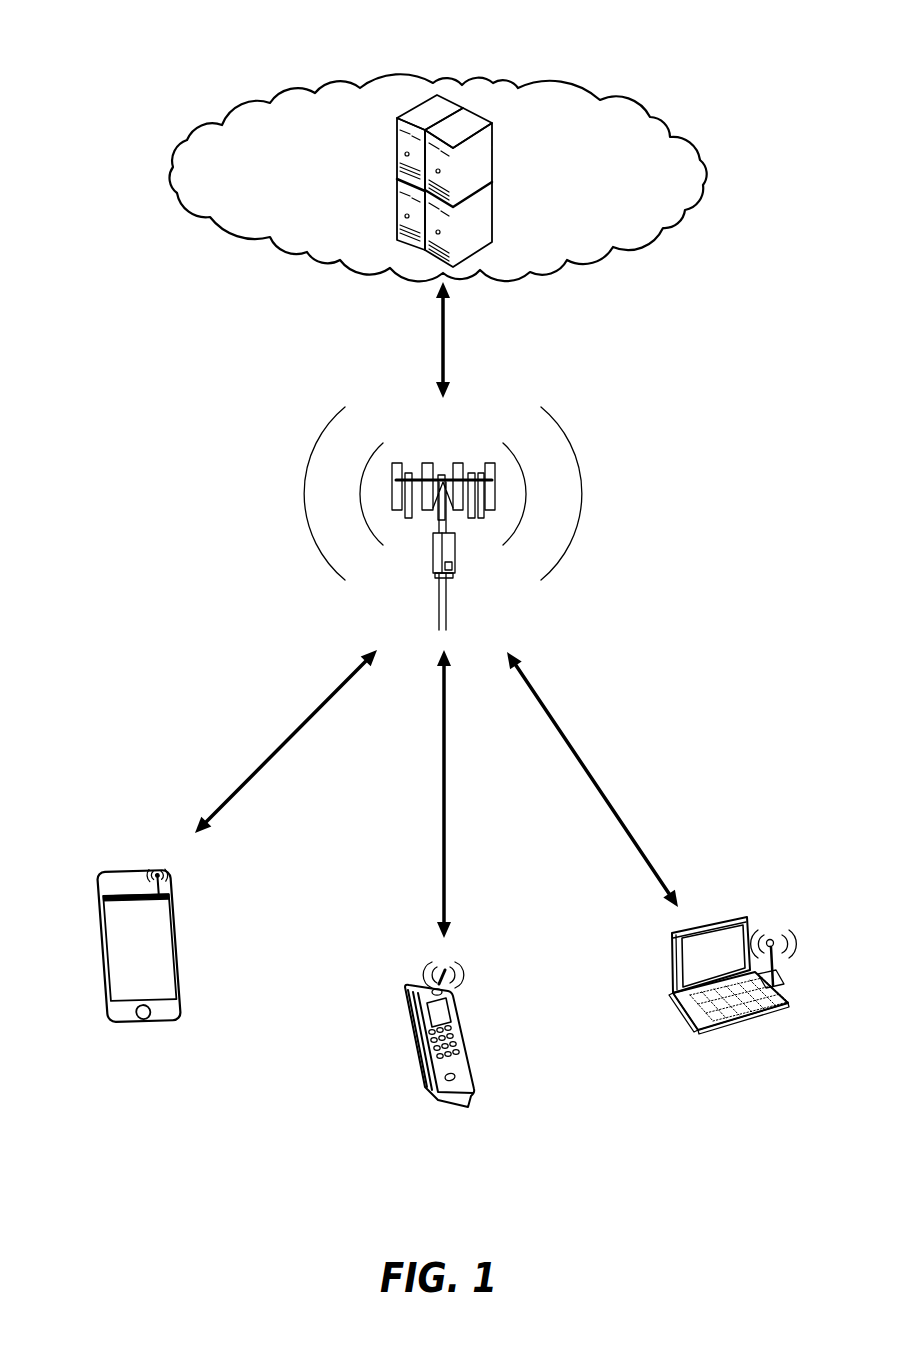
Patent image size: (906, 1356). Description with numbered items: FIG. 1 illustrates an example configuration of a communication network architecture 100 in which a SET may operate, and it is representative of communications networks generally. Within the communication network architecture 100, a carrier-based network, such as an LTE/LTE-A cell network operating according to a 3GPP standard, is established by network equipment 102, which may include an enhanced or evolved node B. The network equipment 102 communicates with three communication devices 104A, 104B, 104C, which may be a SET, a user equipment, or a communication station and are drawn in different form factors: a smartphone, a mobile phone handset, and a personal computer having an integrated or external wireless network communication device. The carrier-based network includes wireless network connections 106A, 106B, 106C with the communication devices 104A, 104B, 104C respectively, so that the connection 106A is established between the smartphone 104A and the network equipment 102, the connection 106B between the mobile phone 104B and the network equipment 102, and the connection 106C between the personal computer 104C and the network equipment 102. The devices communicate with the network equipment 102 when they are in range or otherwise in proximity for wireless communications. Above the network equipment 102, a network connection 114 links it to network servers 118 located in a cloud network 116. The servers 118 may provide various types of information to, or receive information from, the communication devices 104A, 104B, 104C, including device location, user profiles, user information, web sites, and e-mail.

The communication network architecture 100 is at (113, 57).
The network equipment 102 is at (455, 548).
The communication device 104A is at (182, 1008).
The communication device 104B is at (469, 1106).
The communication device 104C is at (672, 992).
The wireless network connection 106A is at (253, 775).
The wireless network connection 106B is at (445, 822).
The wireless network connection 106C is at (611, 807).
The network connection 114 is at (445, 330).
The cloud network 116 is at (651, 116).
The network servers 118 is at (492, 148).